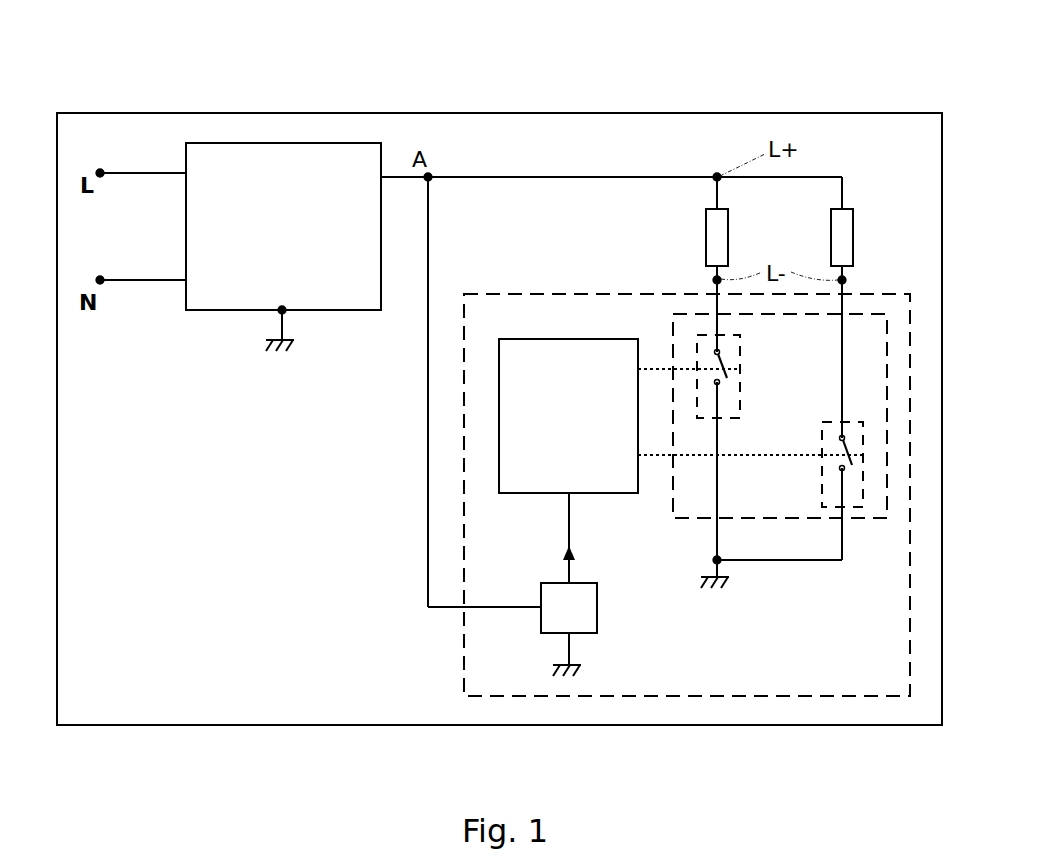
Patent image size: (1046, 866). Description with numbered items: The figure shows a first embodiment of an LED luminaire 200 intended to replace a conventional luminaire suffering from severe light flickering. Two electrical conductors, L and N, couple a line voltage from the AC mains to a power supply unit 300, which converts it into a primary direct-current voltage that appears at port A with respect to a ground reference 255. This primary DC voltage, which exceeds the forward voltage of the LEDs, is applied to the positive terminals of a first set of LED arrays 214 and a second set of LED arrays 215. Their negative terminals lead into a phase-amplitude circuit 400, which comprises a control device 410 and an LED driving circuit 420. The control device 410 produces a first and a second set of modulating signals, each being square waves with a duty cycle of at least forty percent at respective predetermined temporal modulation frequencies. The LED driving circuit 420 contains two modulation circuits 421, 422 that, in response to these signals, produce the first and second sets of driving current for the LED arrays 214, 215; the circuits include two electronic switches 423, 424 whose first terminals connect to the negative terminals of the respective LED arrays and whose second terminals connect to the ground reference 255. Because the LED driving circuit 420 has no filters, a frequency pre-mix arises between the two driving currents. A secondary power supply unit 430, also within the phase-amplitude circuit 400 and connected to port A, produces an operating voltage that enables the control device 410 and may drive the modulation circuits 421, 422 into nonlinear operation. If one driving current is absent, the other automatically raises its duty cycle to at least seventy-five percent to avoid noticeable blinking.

The LED luminaire 200 is at (155, 110).
The power supply unit 300 is at (292, 140).
The ground reference 255 is at (266, 346).
The first set of LED arrays 214 is at (705, 240).
The second set of LED arrays 215 is at (862, 208).
The phase-amplitude circuit 400 is at (566, 291).
The control device 410 is at (498, 400).
The LED driving circuit 420 is at (866, 312).
The first modulation circuit 421 is at (739, 398).
The second modulation circuit 422 is at (826, 420).
The first electronic switch 423 is at (712, 370).
The second electronic switch 424 is at (835, 461).
The secondary power supply unit 430 is at (600, 615).